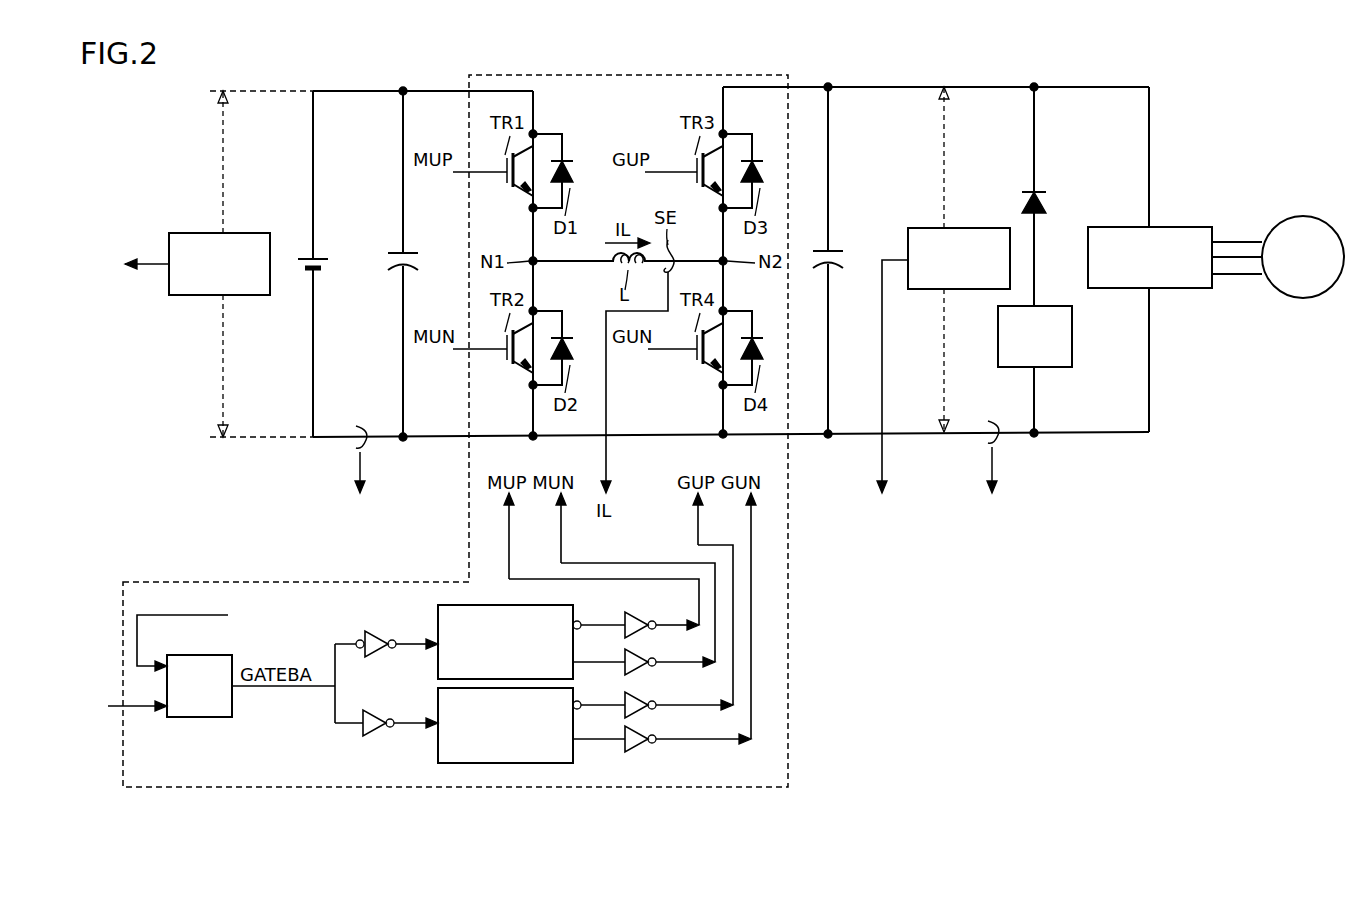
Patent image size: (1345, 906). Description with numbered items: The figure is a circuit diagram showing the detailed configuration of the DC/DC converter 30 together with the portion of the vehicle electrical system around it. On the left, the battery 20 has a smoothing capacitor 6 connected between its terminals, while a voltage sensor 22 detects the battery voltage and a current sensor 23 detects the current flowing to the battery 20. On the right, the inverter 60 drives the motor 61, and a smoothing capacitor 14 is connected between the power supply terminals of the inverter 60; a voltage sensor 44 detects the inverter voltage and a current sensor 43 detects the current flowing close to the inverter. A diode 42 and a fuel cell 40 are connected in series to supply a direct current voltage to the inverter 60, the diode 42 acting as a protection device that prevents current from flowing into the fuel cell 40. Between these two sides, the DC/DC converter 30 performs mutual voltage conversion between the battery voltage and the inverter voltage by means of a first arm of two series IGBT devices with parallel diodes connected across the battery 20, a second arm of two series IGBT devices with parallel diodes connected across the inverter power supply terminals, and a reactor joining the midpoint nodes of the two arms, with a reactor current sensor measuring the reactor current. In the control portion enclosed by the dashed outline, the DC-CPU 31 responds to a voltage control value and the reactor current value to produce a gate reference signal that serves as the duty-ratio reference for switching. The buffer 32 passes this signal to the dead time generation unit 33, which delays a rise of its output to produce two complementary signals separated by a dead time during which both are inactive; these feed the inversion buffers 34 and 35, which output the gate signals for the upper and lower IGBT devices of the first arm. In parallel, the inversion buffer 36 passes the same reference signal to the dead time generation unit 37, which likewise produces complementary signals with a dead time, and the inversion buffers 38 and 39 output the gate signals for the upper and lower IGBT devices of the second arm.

The smoothing capacitor 6 is at (410, 257).
The smoothing capacitor 14 is at (836, 256).
The battery 20 is at (318, 262).
The voltage sensor 22 is at (178, 233).
The current sensor 23 is at (356, 426).
The DC/DC converter 30 is at (789, 651).
The DC-CPU 31 is at (207, 717).
The buffer 32 is at (380, 637).
The dead time generation unit 33 is at (547, 605).
The inversion buffer 34 is at (638, 619).
The inversion buffer 35 is at (638, 669).
The inversion buffer 36 is at (380, 730).
The dead time generation unit 37 is at (547, 763).
The inversion buffer 38 is at (638, 712).
The inversion buffer 39 is at (638, 746).
The fuel cell 40 is at (1056, 367).
The diode 42 is at (1040, 192).
The current sensor 43 is at (988, 421).
The voltage sensor 44 is at (950, 228).
The inverter 60 is at (1183, 227).
The motor 61 is at (1302, 216).